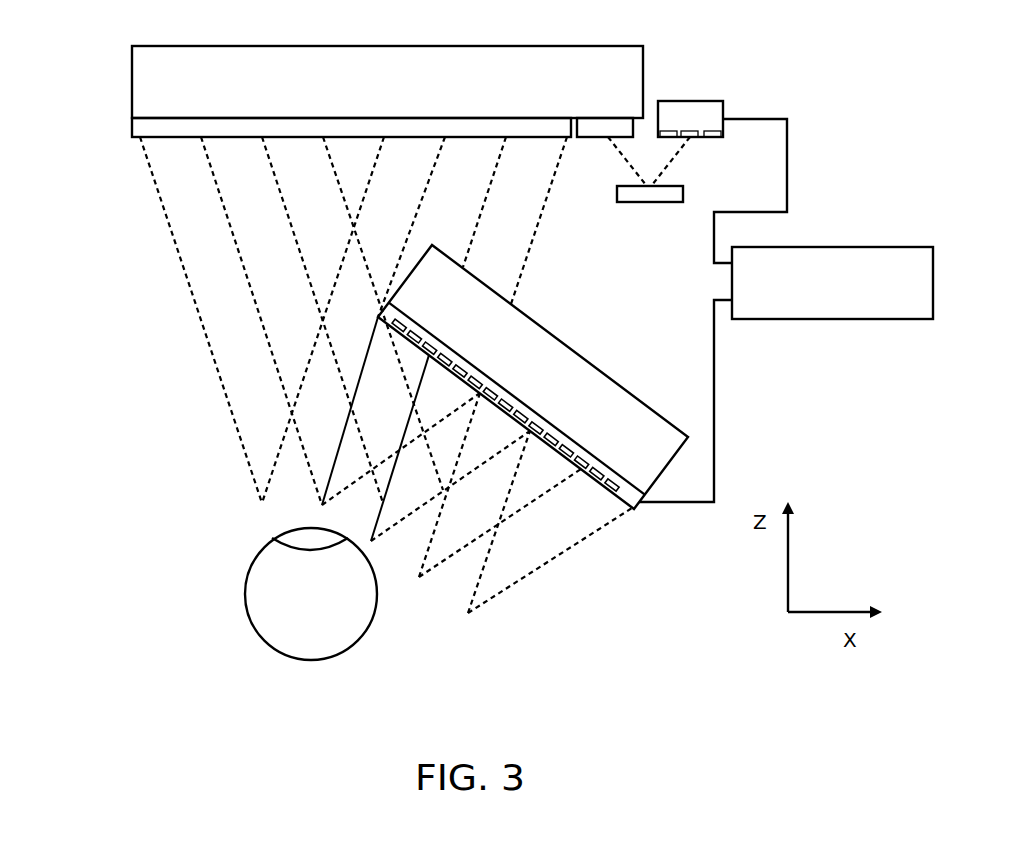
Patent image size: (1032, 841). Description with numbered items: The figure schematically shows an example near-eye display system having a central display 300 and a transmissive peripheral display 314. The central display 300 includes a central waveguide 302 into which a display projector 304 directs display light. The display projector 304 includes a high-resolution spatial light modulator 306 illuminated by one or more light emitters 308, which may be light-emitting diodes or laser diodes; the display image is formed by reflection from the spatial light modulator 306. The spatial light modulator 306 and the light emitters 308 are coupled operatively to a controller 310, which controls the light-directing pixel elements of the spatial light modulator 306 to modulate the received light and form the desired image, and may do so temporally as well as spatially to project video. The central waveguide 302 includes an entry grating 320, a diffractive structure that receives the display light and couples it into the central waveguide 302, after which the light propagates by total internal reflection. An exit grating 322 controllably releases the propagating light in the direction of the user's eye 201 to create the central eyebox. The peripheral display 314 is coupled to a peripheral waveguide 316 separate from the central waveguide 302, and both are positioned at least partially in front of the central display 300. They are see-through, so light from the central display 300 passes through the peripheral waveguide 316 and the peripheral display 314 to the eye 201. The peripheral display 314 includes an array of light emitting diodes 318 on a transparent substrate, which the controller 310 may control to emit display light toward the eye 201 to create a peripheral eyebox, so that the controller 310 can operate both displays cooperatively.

The central display 300 is at (104, 73).
The central waveguide 302 is at (150, 46).
The exit grating 322 is at (168, 118).
The entry grating 320 is at (608, 118).
The display projector 304 is at (690, 101).
The light emitters 308 is at (716, 137).
The spatial light modulator 306 is at (683, 190).
The controller 310 is at (832, 283).
The peripheral waveguide 316 is at (538, 323).
The peripheral display 314 is at (556, 405).
The light emitting diodes 318 is at (612, 497).
The eye 201 is at (246, 590).